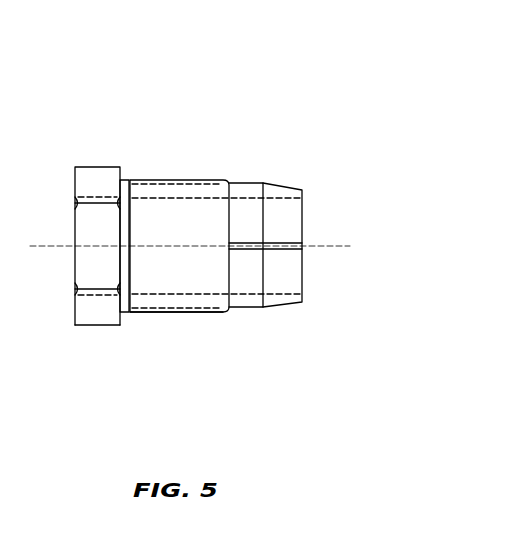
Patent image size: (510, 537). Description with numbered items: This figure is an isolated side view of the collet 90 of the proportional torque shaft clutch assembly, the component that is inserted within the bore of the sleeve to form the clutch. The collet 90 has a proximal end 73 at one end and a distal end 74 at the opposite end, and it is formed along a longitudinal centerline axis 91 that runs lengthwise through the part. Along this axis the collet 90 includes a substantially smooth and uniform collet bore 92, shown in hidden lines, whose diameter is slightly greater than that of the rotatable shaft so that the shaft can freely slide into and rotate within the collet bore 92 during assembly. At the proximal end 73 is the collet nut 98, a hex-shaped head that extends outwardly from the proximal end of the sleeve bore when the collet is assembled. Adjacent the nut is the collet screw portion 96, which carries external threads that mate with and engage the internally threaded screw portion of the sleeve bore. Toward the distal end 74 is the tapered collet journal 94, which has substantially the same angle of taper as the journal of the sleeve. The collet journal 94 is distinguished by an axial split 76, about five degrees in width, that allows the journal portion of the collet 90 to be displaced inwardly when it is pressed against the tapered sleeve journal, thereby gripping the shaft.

The collet 90 is at (198, 121).
The proximal end 73 is at (59, 178).
The longitudinal centerline axis 91 is at (62, 247).
The collet bore 92 is at (200, 199).
The tapered collet journal 94 is at (286, 186).
The distal end 74 is at (316, 189).
The axial split 76 is at (291, 246).
The collet screw portion 96 is at (192, 313).
The collet nut 98 is at (97, 327).